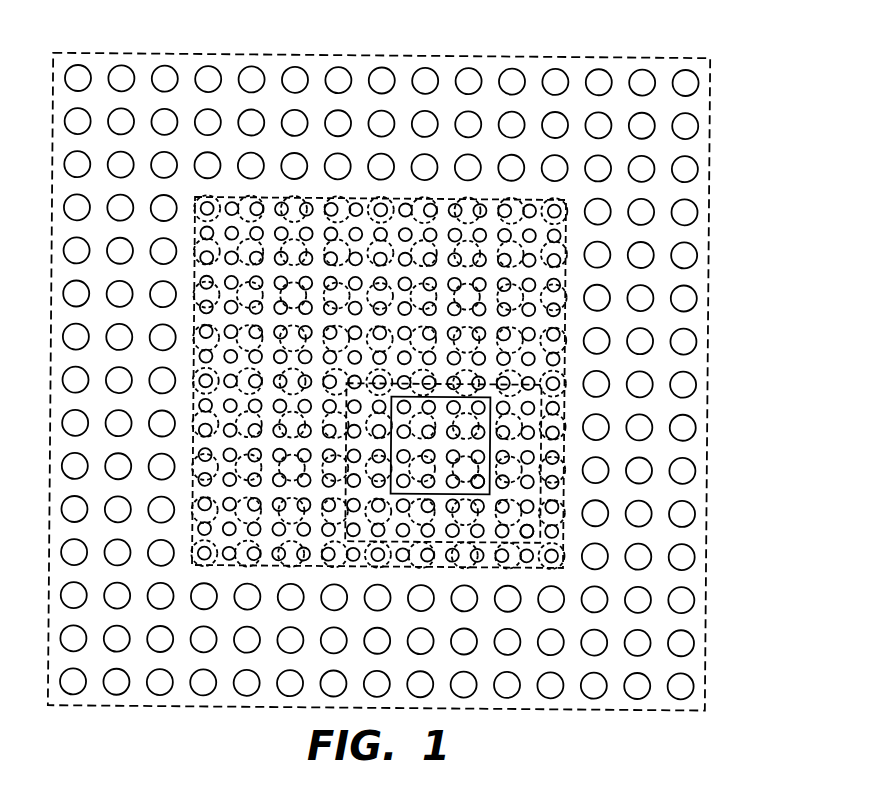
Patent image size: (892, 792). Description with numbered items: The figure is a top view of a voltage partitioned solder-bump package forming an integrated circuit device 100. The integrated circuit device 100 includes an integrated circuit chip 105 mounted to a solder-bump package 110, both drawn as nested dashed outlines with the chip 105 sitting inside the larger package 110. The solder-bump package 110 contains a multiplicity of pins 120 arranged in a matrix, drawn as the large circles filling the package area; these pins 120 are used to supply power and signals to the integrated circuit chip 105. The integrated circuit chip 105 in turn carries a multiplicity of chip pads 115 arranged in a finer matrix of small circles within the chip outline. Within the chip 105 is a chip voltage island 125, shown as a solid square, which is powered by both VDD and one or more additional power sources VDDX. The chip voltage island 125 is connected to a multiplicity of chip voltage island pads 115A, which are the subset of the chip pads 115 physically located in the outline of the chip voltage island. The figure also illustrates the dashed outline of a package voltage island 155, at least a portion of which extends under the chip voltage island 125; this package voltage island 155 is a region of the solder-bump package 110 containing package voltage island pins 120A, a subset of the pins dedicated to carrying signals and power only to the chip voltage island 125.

The integrated circuit device 100 is at (718, 31).
The solder-bump package 110 is at (710, 188).
The chip pads 115 is at (533, 309).
The chip voltage island pads 115A is at (478, 410).
The pins 120 is at (696, 469).
The package voltage island pins 120A is at (471, 474).
The chip voltage island 125 is at (490, 447).
The integrated circuit chip 105 is at (562, 497).
The package voltage island 155 is at (547, 536).